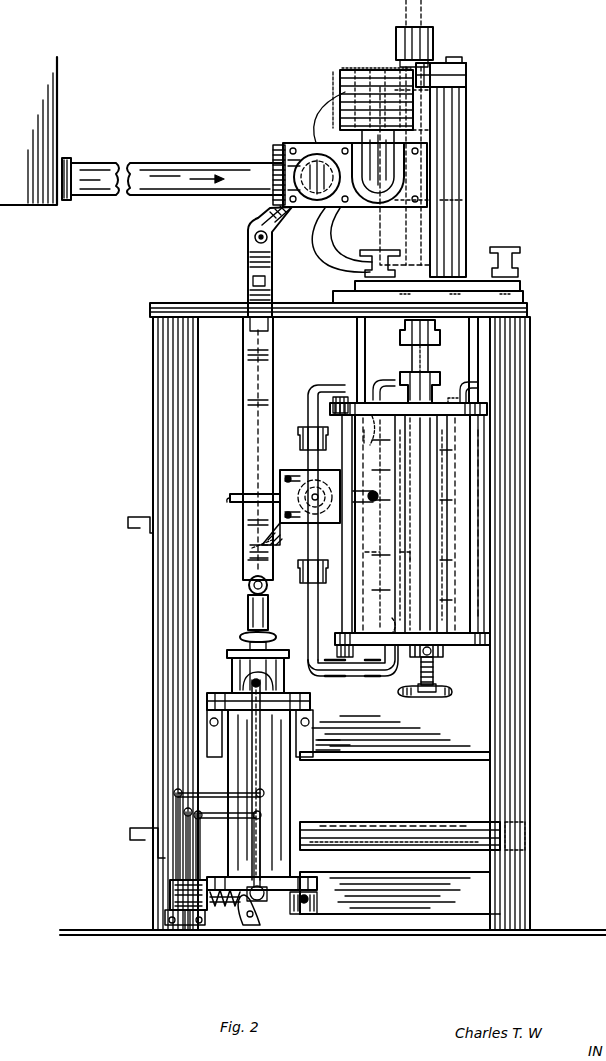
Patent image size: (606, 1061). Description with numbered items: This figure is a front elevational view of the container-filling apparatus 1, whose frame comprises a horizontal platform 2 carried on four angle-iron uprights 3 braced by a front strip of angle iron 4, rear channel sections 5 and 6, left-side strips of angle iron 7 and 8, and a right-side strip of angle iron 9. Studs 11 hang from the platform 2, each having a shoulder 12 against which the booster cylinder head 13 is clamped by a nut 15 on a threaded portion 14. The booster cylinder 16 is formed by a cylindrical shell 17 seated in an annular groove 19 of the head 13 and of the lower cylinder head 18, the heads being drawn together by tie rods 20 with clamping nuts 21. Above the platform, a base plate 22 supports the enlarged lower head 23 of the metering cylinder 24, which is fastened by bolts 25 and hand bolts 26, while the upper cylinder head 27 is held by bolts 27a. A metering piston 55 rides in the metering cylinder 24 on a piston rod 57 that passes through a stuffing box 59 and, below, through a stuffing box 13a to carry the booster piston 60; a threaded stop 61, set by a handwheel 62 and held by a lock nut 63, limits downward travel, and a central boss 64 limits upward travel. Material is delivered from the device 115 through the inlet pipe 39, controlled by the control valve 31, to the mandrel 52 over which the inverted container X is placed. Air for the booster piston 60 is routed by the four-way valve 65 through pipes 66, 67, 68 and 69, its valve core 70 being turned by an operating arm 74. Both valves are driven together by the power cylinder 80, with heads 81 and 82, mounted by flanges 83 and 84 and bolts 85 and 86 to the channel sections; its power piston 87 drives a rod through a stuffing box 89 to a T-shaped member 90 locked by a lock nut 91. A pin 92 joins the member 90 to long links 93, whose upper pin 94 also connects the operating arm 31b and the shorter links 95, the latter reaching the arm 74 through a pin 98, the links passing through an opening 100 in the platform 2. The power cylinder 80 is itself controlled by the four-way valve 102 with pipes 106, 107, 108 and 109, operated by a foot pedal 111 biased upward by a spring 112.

The container-filling apparatus 1 is at (532, 478).
The horizontal platform 2 is at (150, 306).
The uprights 3 is at (165, 398).
The strip of angle iron 4 is at (412, 830).
The channel section 5 is at (408, 882).
The channel section 6 is at (378, 758).
The strip of angle iron 7 is at (128, 518).
The strip of angle iron 8 is at (130, 830).
The strip of angle iron 9 is at (530, 833).
The studs 11 is at (357, 322).
The shoulder 12 is at (472, 403).
The booster cylinder head 13 is at (487, 410).
The stuffing box 13a is at (432, 380).
The threaded portion 14 is at (365, 450).
The nut 15 is at (383, 437).
The booster cylinder 16 is at (470, 520).
The cylindrical shell 17 is at (500, 540).
The lower cylinder head 18 is at (475, 643).
The annular groove 19 is at (424, 511).
The tie rods 20 is at (420, 488).
The clamping nuts 21 is at (308, 392).
The base plate 22 is at (525, 296).
The lower head 23 is at (522, 284).
The metering cylinder 24 is at (466, 142).
The bolts 25 is at (409, 332).
The hand bolts 26 is at (505, 250).
The upper cylinder head 27 is at (468, 70).
The bolts 27a is at (453, 57).
The control valve 31 is at (303, 150).
The operating arm 31b is at (270, 217).
The inlet pipe 39 is at (150, 170).
The mandrel 52 is at (350, 80).
The metering piston 55 is at (462, 202).
The piston rod 57 is at (412, 356).
The stuffing box 59 is at (400, 32).
The booster piston 60 is at (510, 565).
The threaded stop 61 is at (443, 650).
The handwheel 62 is at (424, 697).
The lock nut 63 is at (440, 668).
The central boss 64 is at (410, 552).
The four-way valve 65 is at (288, 478).
The pipe 66 is at (236, 492).
The pipe 67 is at (343, 378).
The pipe 68 is at (325, 676).
The pipe 69 is at (374, 498).
The valve core 70 is at (302, 478).
The operating arm 74 is at (285, 540).
The power cylinder 80 is at (295, 793).
The head 81 is at (220, 692).
The head 82 is at (320, 883).
The flange 83 is at (305, 732).
The flange 84 is at (320, 913).
The bolts 85 is at (310, 899).
The bolts 86 is at (320, 750).
The power piston 87 is at (295, 843).
The stuffing box 89 is at (235, 660).
The T-shaped member 90 is at (235, 612).
The lock nut 91 is at (270, 635).
The pin 92 is at (248, 584).
The long links 93 is at (253, 556).
The pin 94 is at (255, 237).
The shorter links 95 is at (273, 440).
The pin 98 is at (258, 548).
The opening 100 is at (255, 303).
The four-way valve 102 is at (172, 890).
The pipe 106 is at (184, 813).
The pipe 107 is at (178, 792).
The pipe 108 is at (265, 817).
The pipe 109 is at (168, 917).
The foot pedal 111 is at (260, 918).
The spring 112 is at (222, 906).
The device 115 is at (62, 92).
The container X is at (340, 70).